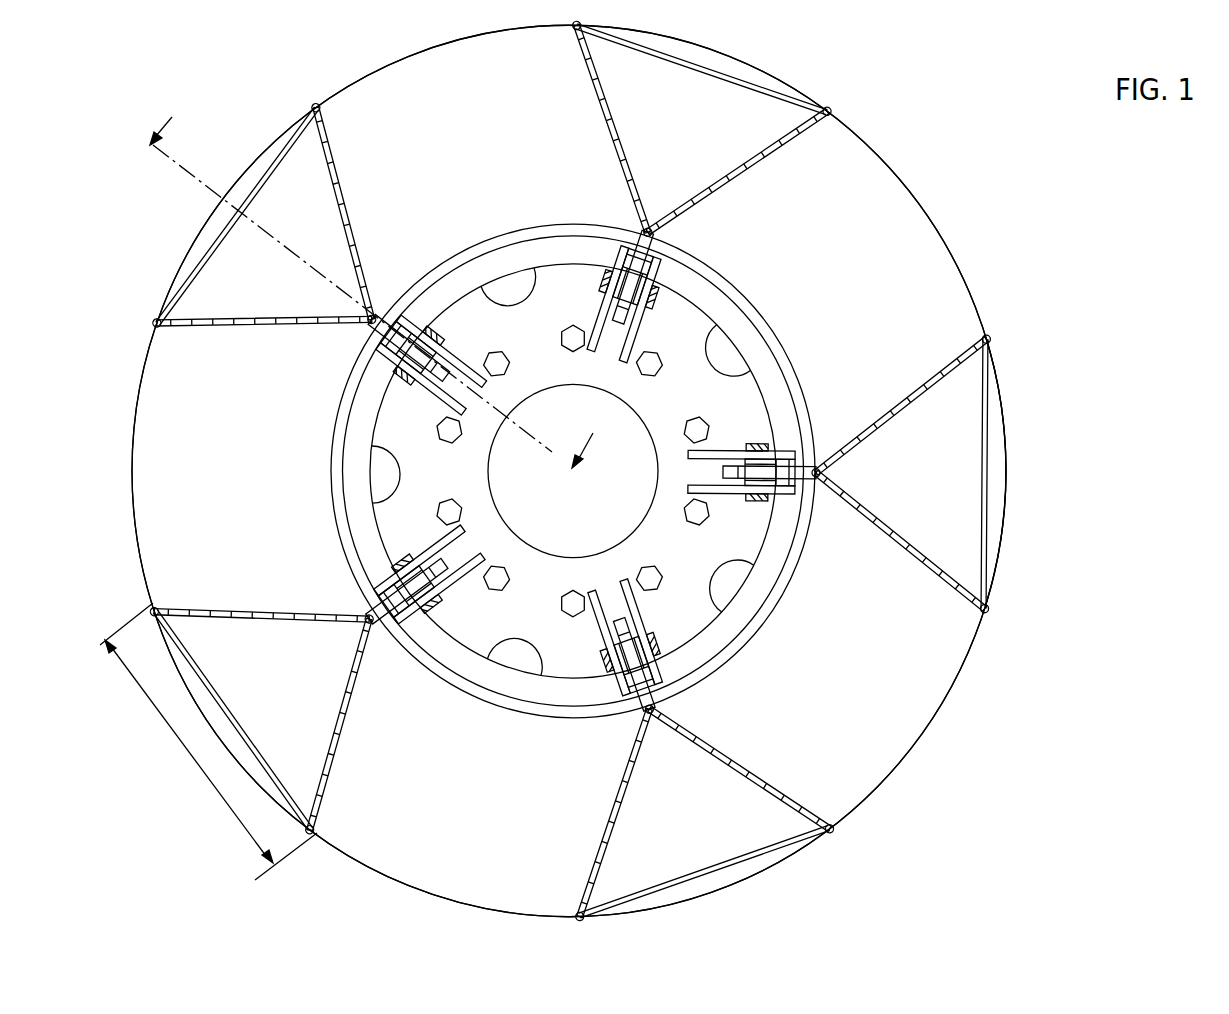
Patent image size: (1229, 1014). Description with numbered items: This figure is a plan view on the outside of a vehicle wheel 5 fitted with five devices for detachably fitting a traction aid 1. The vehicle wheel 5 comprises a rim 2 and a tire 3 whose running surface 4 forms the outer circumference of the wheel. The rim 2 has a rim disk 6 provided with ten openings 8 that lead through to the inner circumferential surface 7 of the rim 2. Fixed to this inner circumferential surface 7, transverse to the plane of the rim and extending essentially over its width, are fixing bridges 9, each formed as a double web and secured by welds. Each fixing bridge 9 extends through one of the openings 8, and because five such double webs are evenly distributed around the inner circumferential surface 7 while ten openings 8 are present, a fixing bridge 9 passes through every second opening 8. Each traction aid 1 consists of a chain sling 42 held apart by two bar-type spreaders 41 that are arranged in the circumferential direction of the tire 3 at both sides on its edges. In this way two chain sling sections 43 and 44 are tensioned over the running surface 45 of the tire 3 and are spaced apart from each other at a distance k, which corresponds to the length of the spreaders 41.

The traction aid 1 is at (296, 821).
The rim 2 is at (788, 570).
The tire 3 is at (835, 673).
The running surface 4 is at (907, 763).
The vehicle wheel 5 is at (974, 248).
The rim disk 6 is at (667, 333).
The inner circumferential surface 7 is at (743, 352).
The opening 8 is at (728, 350).
The fixing bridge 9 is at (484, 426).
The bar-type spreader 41 is at (985, 465).
The chain sling 42 is at (630, 112).
The chain sling section 43 is at (990, 334).
The chain sling section 44 is at (988, 605).
The running surface 45 is at (1005, 500).